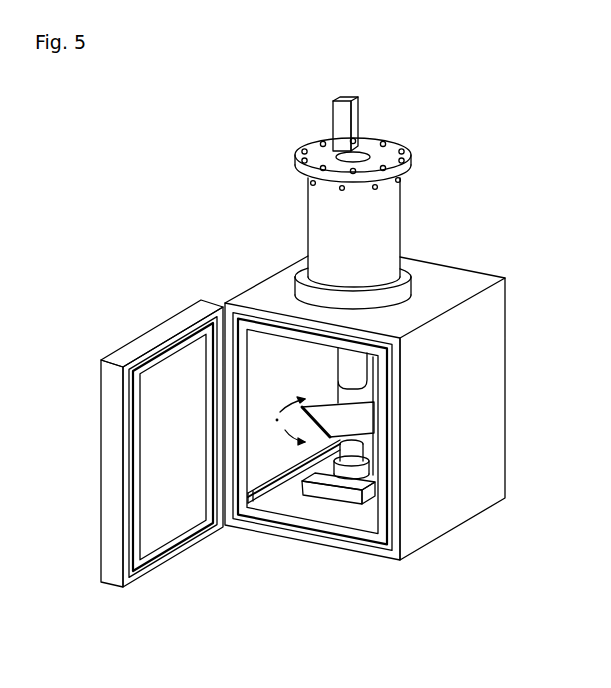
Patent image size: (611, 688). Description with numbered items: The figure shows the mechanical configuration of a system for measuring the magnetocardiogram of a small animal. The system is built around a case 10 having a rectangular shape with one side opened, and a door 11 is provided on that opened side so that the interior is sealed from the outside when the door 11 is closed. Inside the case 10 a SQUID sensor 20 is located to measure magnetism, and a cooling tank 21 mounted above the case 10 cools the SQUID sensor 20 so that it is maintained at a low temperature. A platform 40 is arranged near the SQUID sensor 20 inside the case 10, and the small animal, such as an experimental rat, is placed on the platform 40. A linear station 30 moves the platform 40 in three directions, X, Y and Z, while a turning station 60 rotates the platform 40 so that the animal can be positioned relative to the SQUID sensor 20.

The case 10 is at (490, 437).
The door 11 is at (162, 330).
The SQUID sensor 20 is at (364, 373).
The cooling tank 21 is at (395, 222).
The linear station 30 is at (328, 503).
The platform 40 is at (375, 434).
The turning station 60 is at (366, 437).